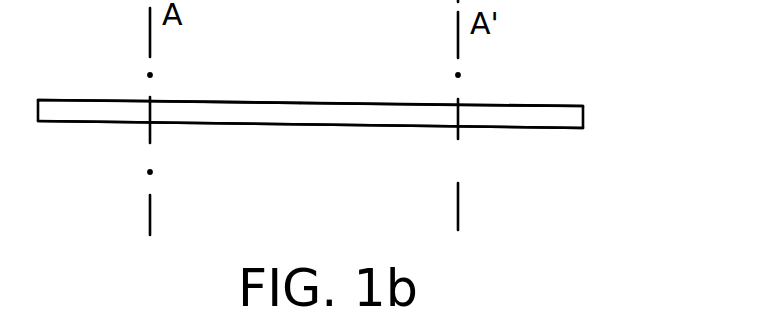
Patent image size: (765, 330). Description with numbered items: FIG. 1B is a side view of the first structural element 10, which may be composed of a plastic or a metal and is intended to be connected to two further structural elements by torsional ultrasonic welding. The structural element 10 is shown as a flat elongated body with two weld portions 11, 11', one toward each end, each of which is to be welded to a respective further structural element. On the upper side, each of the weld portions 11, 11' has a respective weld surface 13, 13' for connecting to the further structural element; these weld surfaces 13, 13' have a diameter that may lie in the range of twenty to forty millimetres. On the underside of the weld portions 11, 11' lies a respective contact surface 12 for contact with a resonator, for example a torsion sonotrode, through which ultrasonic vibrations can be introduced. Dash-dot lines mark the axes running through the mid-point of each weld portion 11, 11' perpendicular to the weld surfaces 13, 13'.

The first structural element 10 is at (598, 95).
The weld portion 11 is at (225, 64).
The weld portion 11' is at (522, 65).
The contact surface 12 is at (165, 122).
The weld surface 13 is at (94, 62).
The weld surface 13' is at (379, 64).